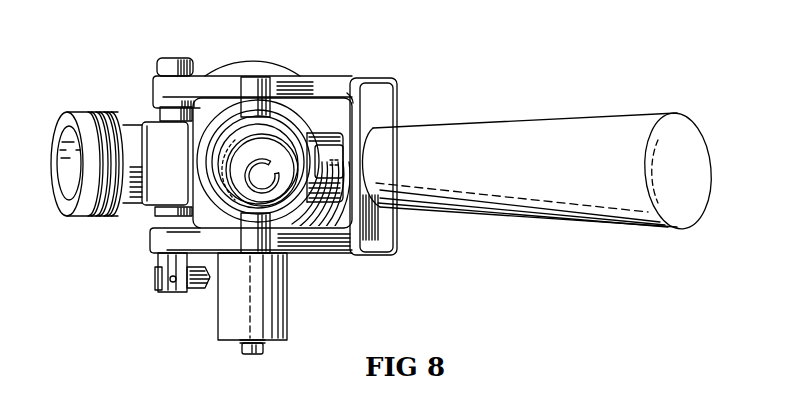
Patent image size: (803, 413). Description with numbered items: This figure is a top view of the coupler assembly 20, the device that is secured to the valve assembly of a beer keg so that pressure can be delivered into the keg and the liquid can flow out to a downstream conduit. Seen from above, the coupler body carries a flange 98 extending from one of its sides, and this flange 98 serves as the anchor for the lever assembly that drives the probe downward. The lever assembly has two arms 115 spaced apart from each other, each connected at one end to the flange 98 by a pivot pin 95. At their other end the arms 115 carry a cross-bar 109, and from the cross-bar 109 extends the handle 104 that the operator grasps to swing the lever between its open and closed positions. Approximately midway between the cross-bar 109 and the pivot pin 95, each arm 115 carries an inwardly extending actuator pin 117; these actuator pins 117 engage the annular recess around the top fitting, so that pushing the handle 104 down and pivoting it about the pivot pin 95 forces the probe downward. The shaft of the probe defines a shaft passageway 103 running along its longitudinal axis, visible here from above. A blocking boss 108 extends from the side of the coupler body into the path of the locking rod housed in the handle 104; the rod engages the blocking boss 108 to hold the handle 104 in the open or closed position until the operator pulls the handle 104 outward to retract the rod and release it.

The coupler assembly 20 is at (484, 46).
The pivot pin 95 is at (157, 258).
The flange 98 is at (176, 173).
The shaft passageway 103 is at (243, 150).
The handle 104 is at (539, 130).
The blocking boss 108 is at (327, 138).
The cross-bar 109 is at (378, 113).
The arms 115 is at (312, 90).
The actuator pins 117 is at (267, 104).